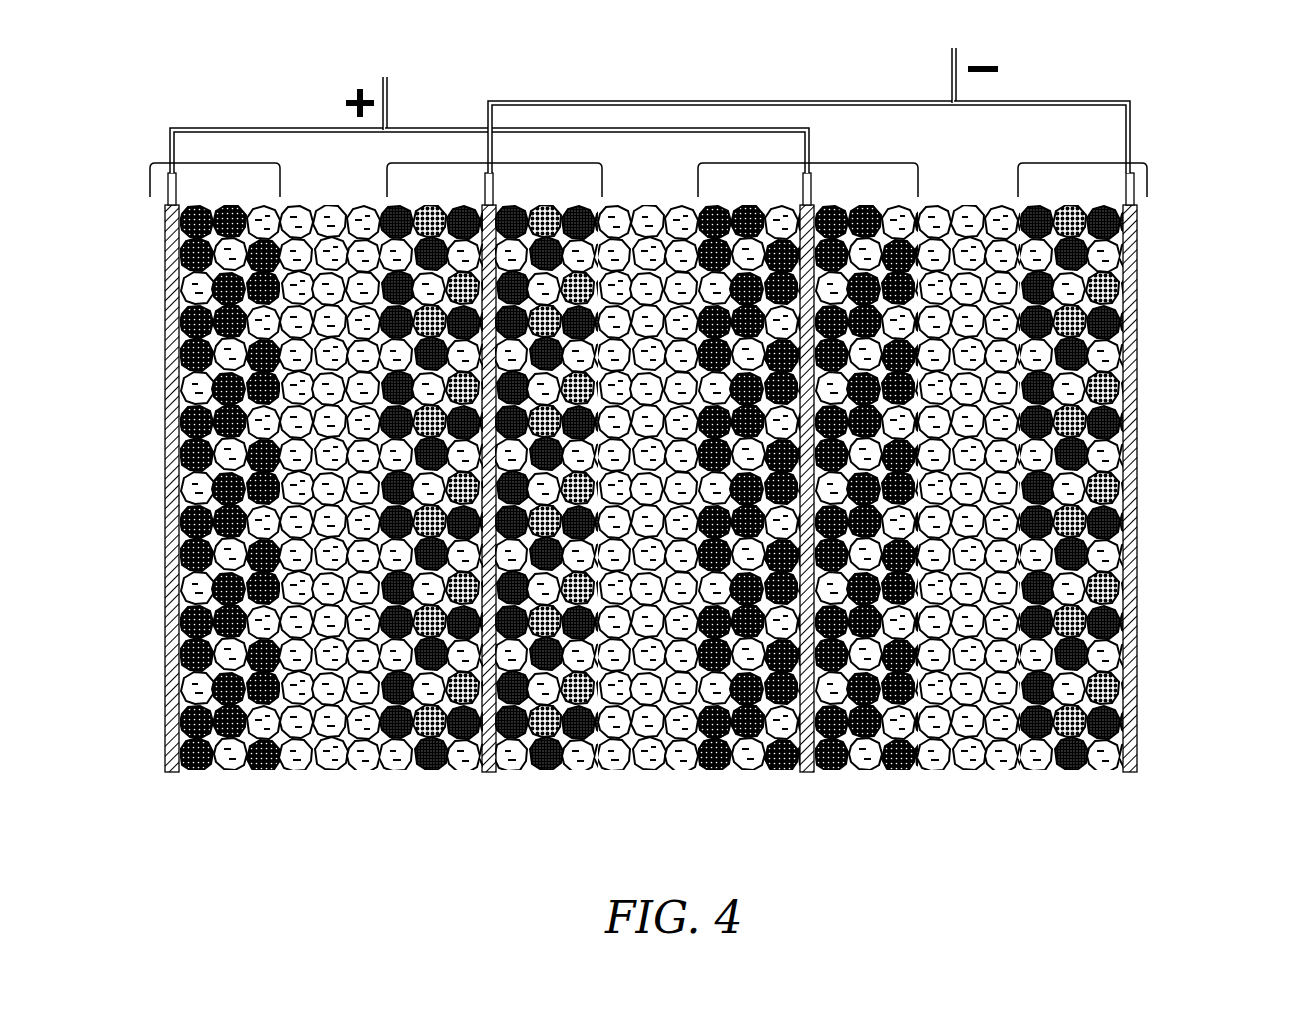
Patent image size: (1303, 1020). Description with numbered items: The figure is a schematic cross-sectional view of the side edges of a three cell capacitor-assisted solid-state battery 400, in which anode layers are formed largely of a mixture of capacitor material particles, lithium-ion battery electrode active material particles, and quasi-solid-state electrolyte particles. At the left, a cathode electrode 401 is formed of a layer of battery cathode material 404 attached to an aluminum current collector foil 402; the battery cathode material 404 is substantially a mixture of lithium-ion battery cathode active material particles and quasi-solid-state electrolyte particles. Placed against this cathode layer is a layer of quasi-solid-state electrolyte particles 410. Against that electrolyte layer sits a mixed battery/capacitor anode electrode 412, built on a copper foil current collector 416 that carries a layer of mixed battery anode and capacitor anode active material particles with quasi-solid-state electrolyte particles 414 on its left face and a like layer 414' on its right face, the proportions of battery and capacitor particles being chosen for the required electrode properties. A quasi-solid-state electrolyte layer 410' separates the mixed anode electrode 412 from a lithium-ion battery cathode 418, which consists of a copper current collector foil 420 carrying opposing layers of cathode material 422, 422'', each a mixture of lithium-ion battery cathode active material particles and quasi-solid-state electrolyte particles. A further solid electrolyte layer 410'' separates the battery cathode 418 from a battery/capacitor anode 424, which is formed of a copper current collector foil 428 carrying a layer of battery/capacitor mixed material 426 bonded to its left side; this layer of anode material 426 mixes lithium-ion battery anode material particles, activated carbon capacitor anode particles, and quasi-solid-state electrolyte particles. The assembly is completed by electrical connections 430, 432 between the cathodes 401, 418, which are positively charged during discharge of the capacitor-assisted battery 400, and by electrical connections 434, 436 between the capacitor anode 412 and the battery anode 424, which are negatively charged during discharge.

The capacitor-assisted solid-state battery 400 is at (672, 447).
The cathode electrode 401 is at (207, 155).
The aluminum current collector foil 402 is at (162, 712).
The battery cathode material 404 is at (238, 794).
The quasi-solid-state electrolyte particles layer 410 is at (330, 532).
The quasi-solid-state electrolyte layer 410' is at (648, 532).
The solid electrolyte layer 410'' is at (973, 531).
The mixed battery/capacitor anode electrode 412 is at (460, 155).
The layer of mixed battery anode and capacitor anode active material particles 414 is at (431, 540).
The layer of battery anode materials/capacitor anode materials/quasi-solid-state ele 414' is at (546, 538).
The copper foil current collector 416 is at (488, 776).
The lithium-ion battery cathode 418 is at (849, 155).
The copper current collector foil 420 is at (810, 776).
The layer of cathode material 422 is at (749, 539).
The layer of cathode material 422'' is at (872, 531).
The battery/capacitor anode 424 is at (1085, 155).
The layer of battery/capacitor mixed material 426 is at (1067, 778).
The copper current collector foil 428 is at (1137, 680).
The electrical connection 430 is at (300, 130).
The electrical connection 432 is at (598, 130).
The electrical connection 434 is at (762, 101).
The electrical connection 436 is at (1065, 101).